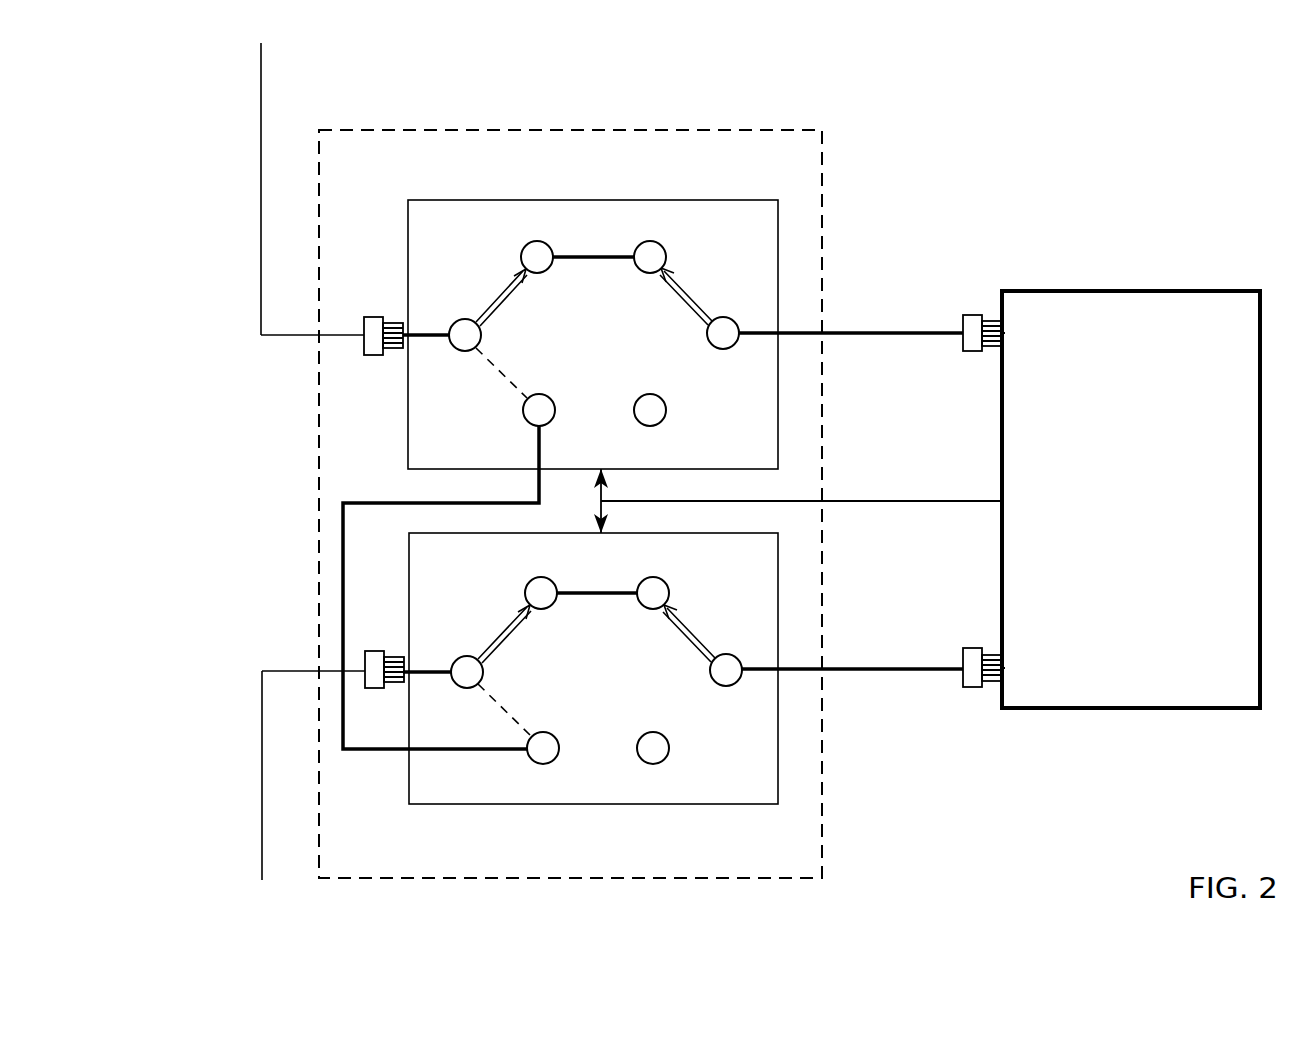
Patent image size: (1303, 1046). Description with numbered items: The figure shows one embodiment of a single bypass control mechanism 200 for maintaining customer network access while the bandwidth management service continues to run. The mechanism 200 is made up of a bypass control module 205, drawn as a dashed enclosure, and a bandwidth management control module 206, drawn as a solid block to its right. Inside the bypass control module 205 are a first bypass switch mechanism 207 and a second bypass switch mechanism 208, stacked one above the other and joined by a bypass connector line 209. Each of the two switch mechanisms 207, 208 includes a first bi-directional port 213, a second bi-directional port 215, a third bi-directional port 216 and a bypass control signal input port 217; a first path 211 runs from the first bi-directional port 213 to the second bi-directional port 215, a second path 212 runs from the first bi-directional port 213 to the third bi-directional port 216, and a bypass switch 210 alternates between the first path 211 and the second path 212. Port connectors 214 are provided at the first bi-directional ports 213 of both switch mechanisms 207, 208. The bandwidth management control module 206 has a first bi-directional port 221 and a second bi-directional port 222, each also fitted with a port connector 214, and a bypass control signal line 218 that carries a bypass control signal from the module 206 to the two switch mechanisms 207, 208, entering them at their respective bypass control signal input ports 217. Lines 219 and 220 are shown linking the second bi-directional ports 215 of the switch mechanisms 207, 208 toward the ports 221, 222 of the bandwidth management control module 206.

The single bypass control mechanism 200 is at (205, 158).
The bypass control module 205 is at (660, 129).
The bandwidth management control module 206 is at (1182, 290).
The first bypass switch mechanism 207 is at (780, 233).
The second bypass switch mechanism 208 is at (780, 727).
The bypass connector line 209 is at (342, 598).
The bypass switch 210 is at (488, 306).
The first path 211 is at (617, 262).
The second path 212 is at (515, 388).
The first bi-directional port 213 is at (416, 338).
The port connector 214 is at (365, 316).
The second bi-directional port 215 is at (770, 328).
The third bi-directional port 216 is at (535, 463).
The bypass control signal input port 217 is at (603, 468).
The bypass control signal line 218 is at (920, 500).
The first output line 219 is at (920, 340).
The second output line 220 is at (920, 668).
The first bi-directional port 221 is at (1002, 333).
The second bi-directional port 222 is at (1002, 668).